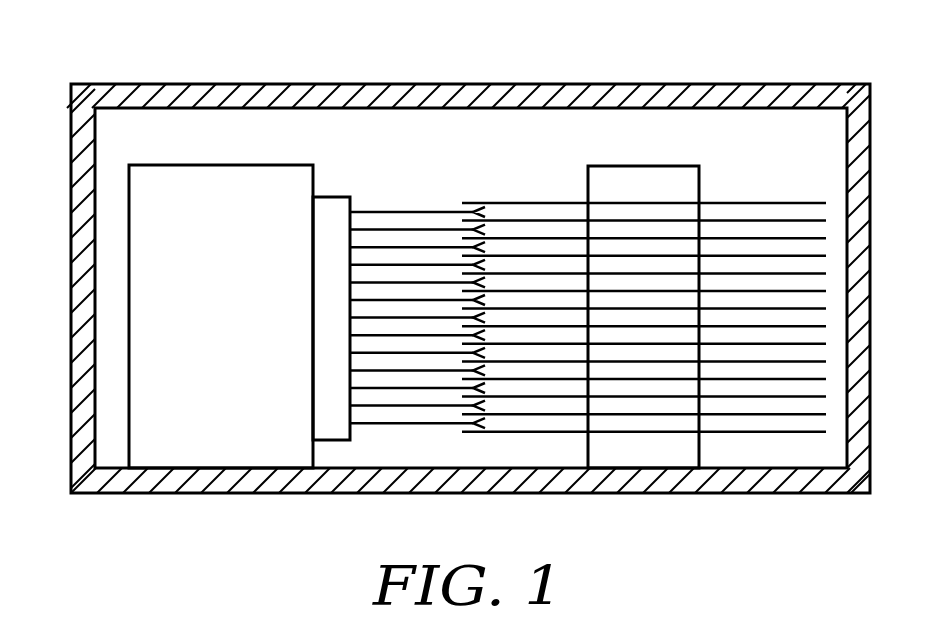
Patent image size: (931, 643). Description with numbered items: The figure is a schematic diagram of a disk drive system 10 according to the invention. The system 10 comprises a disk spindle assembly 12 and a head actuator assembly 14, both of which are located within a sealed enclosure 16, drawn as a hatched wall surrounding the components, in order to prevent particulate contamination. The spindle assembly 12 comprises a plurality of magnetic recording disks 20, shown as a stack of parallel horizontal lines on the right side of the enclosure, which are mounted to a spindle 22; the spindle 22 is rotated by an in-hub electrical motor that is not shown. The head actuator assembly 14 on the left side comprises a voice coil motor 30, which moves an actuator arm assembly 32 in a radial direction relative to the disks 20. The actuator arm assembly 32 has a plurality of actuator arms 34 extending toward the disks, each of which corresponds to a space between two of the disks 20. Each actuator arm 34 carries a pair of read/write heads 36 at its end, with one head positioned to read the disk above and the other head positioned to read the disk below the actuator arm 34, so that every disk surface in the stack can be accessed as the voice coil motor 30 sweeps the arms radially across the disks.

The disk drive system 10 is at (140, 528).
The disk spindle assembly 12 is at (616, 150).
The head actuator assembly 14 is at (276, 152).
The sealed enclosure 16 is at (455, 83).
The magnetic recording disks 20 is at (533, 200).
The spindle 22 is at (642, 165).
The voice coil motor 30 is at (233, 249).
The actuator arm assembly 32 is at (332, 195).
The actuator arms 34 is at (400, 210).
The read/write heads 36 is at (478, 210).